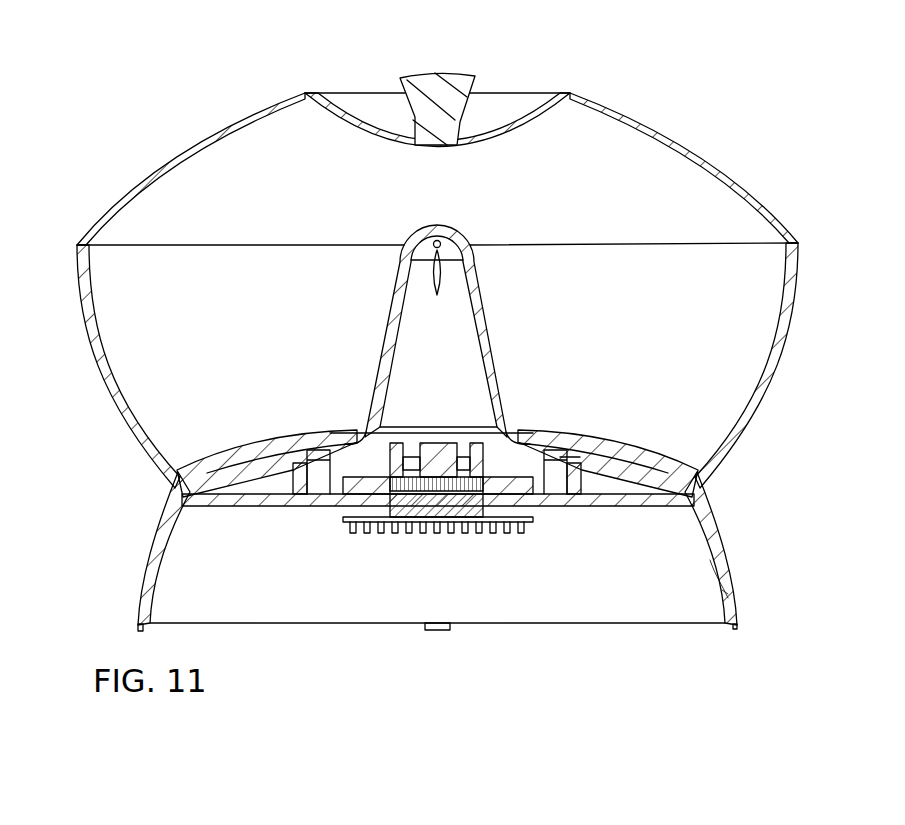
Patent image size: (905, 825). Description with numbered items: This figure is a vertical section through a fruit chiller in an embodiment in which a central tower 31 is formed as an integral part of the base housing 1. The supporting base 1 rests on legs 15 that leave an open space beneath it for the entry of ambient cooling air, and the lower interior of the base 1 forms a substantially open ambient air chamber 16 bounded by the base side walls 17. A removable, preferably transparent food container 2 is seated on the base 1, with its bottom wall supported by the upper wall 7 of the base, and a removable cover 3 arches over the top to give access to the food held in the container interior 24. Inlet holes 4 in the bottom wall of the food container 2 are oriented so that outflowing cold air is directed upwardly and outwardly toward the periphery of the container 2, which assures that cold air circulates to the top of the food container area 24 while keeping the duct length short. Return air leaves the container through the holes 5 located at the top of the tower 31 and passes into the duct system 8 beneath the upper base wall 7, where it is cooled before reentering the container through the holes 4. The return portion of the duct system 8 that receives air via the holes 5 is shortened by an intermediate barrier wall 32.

The supporting base 1 is at (150, 549).
The removable container 2 is at (102, 374).
The removable cover 3 is at (188, 148).
The inlet holes 4 is at (312, 438).
The outlet holes 5 is at (477, 243).
The upper wall 7 is at (194, 507).
The duct system 8 is at (327, 477).
The legs 15 is at (138, 627).
The ambient air chamber 16 is at (697, 584).
The base side walls 17 is at (717, 587).
The container interior 24 is at (645, 319).
The tower 31 is at (383, 322).
The intermediate barrier wall 32 is at (587, 477).